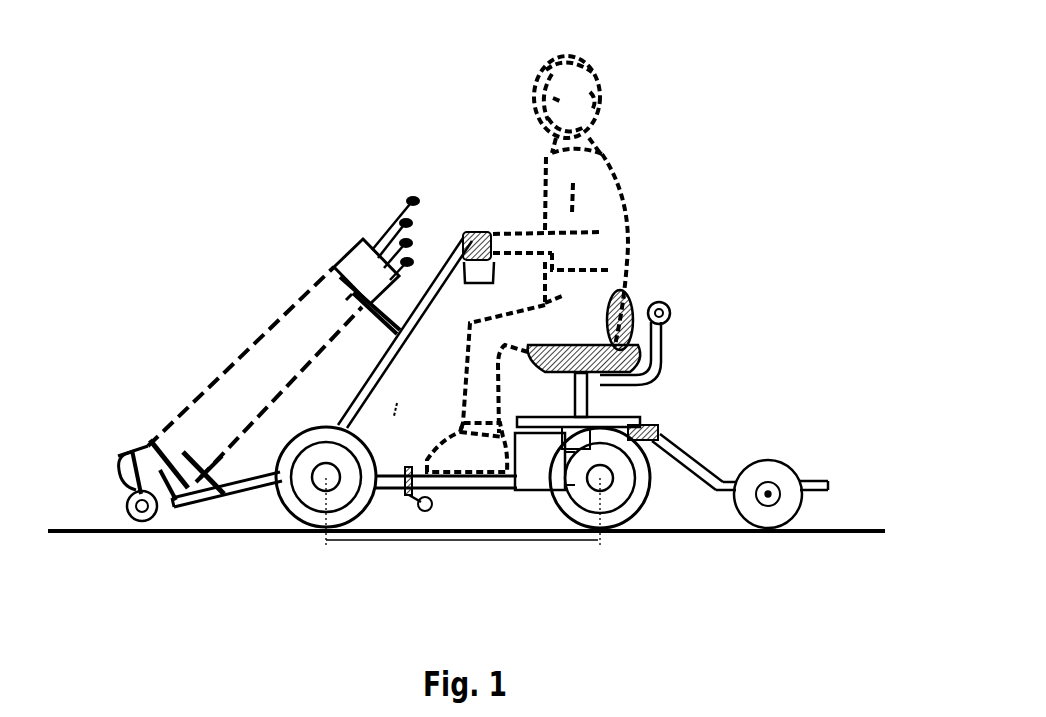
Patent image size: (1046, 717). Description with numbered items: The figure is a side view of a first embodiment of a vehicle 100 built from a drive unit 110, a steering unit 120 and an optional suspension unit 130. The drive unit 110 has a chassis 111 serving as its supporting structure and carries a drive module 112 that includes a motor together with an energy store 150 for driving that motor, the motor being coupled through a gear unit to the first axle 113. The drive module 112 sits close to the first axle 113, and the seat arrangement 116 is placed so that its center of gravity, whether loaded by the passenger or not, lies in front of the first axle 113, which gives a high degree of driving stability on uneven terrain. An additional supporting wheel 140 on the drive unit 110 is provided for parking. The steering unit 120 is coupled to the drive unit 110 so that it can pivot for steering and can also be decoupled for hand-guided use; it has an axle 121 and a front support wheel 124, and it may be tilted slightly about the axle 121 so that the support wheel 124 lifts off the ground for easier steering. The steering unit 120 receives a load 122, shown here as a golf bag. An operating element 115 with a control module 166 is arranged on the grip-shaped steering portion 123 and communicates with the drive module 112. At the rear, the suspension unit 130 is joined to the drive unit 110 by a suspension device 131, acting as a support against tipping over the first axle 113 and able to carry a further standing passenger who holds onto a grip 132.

The vehicle 100 is at (641, 110).
The drive unit 110 is at (679, 373).
The chassis 111 is at (467, 497).
The drive module 112 is at (546, 472).
The first axle 113 is at (612, 498).
The operating element 115 is at (464, 232).
The seat arrangement 116 is at (642, 300).
The steering unit 120 is at (243, 289).
The axle 121 is at (318, 493).
The load 122 is at (234, 391).
The steering portion 123 is at (452, 246).
The front support wheel 124 is at (163, 542).
The suspension unit 130 is at (720, 482).
The suspension device 131 is at (663, 436).
The grip 132 is at (671, 304).
The supporting wheel 140 is at (406, 508).
The energy store 150 is at (532, 470).
The control module 166 is at (479, 228).